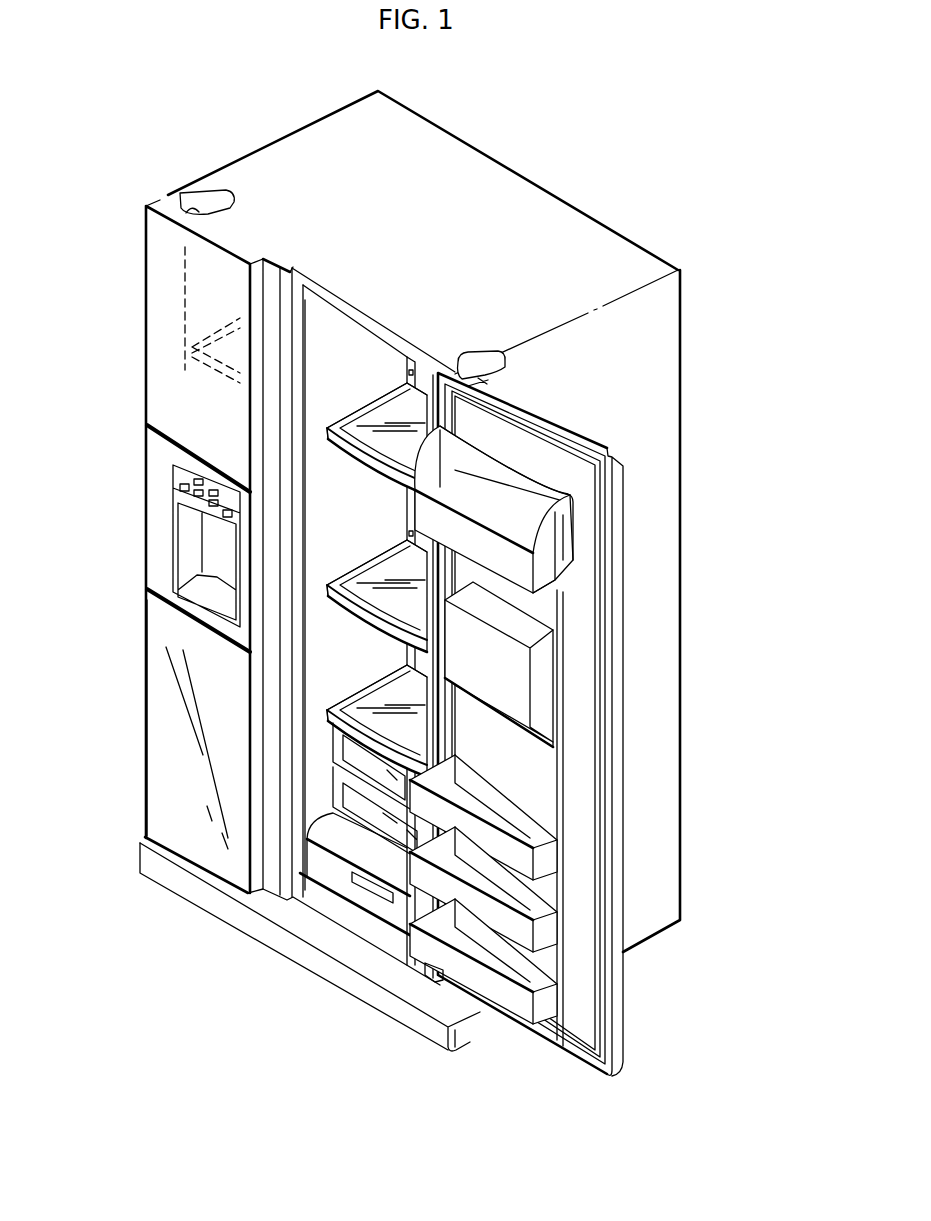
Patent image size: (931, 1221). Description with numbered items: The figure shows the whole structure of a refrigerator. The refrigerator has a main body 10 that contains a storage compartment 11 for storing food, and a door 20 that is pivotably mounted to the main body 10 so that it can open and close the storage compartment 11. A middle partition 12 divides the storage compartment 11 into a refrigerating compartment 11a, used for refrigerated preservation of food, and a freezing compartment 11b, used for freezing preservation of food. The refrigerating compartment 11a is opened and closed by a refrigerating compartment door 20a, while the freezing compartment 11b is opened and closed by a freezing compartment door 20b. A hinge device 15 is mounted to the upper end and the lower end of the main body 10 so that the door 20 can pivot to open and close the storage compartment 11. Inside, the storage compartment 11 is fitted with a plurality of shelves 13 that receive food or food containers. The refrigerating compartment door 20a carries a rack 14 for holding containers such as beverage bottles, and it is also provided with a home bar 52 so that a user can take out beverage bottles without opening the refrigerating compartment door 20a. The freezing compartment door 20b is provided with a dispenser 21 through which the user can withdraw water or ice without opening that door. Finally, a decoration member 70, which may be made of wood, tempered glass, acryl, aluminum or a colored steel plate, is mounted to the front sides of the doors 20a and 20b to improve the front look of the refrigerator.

The main body 10 is at (604, 211).
The storage compartment 11 is at (283, 535).
The refrigerating compartment 11a is at (335, 382).
The freezing compartment 11b is at (211, 303).
The middle partition 12 is at (297, 687).
The shelves 13 is at (400, 400).
The rack 14 is at (548, 856).
The hinge device 15 is at (207, 196).
The door 20 is at (416, 638).
The refrigerating compartment door 20a is at (650, 544).
The freezing compartment door 20b is at (155, 546).
The dispenser 21 is at (185, 542).
The home bar 52 is at (540, 686).
The decoration member 70 is at (163, 733).